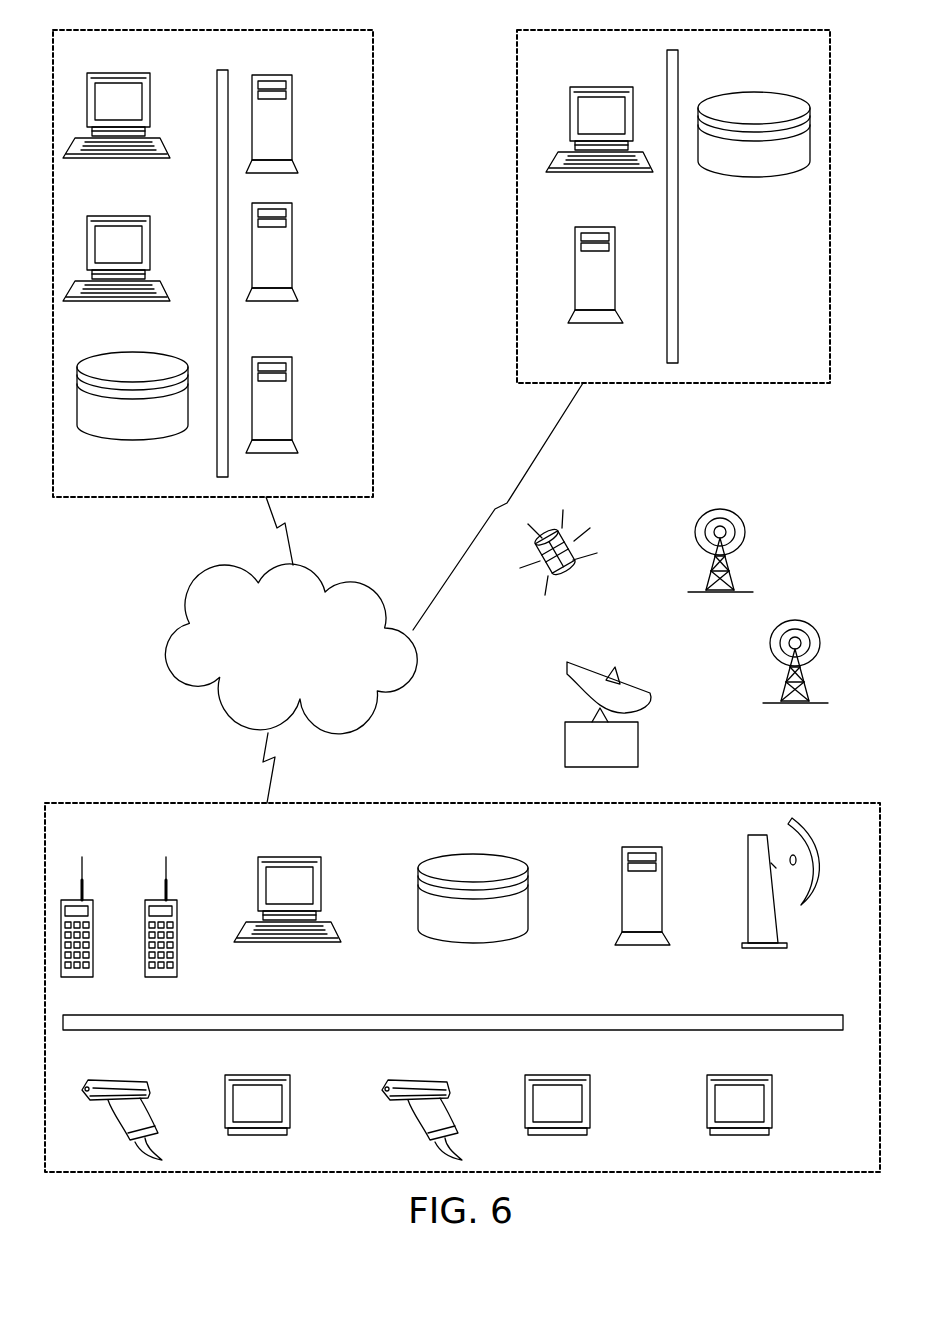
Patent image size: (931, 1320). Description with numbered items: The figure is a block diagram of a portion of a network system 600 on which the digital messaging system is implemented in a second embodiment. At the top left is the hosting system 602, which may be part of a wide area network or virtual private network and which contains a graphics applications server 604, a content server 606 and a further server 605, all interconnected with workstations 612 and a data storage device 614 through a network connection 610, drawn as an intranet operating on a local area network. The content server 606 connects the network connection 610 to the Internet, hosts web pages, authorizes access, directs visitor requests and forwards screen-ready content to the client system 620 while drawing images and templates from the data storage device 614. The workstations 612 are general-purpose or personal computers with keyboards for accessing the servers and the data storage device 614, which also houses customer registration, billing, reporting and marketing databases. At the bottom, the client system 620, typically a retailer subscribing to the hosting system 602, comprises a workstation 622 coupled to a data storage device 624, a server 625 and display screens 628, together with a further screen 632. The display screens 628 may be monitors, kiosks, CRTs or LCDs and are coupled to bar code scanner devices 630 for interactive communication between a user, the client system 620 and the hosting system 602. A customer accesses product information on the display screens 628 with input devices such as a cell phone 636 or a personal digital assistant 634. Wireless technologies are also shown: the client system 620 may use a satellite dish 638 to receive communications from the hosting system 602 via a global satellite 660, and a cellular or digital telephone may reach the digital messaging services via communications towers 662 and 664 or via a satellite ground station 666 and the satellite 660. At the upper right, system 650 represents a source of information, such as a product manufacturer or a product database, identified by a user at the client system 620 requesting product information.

The system 600 is at (220, 1197).
The hosting system 602 is at (373, 142).
The graphics applications server 604 is at (293, 120).
The server 605 is at (293, 402).
The content server 606 is at (293, 250).
The network connection 610 is at (229, 82).
The workstations 612 is at (150, 115).
The data storage device 614 is at (150, 352).
The client system 620 is at (733, 802).
The workstation 622 is at (322, 900).
The data storage device 624 is at (493, 855).
The server 625 is at (663, 892).
The display screens 628 is at (290, 1113).
The bar code scanner devices 630 is at (148, 1110).
The terminal 632 is at (770, 1113).
The personal digital assistant 634 is at (176, 900).
The cell phone 636 is at (91, 900).
The satellite dish 638 is at (797, 855).
The system 650 is at (518, 183).
The satellite 660 is at (572, 533).
The communications tower 662 is at (745, 533).
The communications tower 664 is at (820, 635).
The satellite ground station 666 is at (622, 680).